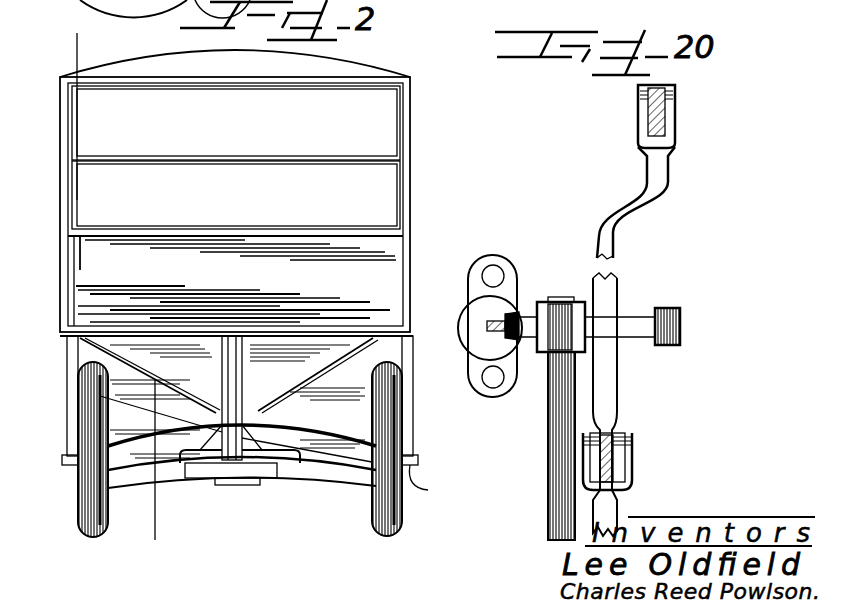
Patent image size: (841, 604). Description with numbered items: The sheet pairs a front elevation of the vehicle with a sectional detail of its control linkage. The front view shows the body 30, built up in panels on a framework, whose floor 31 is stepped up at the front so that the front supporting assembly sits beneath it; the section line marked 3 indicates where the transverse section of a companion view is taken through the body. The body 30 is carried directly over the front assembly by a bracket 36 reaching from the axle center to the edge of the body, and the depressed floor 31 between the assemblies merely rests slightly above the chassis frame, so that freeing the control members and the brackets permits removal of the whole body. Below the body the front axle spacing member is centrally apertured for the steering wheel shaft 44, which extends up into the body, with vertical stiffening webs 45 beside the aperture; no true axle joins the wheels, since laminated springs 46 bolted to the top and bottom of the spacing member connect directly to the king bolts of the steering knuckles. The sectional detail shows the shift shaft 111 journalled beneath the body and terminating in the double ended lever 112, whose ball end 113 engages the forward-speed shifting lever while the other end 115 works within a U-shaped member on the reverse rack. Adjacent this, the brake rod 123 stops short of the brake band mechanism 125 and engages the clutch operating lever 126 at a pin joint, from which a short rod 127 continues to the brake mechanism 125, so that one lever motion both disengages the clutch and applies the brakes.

In FIG. 2, the section line 3- 3 is at (62, 50).
In FIG. 2, the body 30 is at (412, 265).
In FIG. 2, the floor 31 is at (445, 480).
In FIG. 2, the bracket 36 is at (229, 398).
In FIG. 2, the steering wheel shaft 44 is at (270, 392).
In FIG. 2, the vertical stiffening web 45 is at (208, 414).
In FIG. 2, the laminated spring 46 is at (330, 412).
In FIG. 20, the shaft 111 is at (562, 418).
In FIG. 20, the double ended lever 112 is at (536, 312).
In FIG. 20, the ball end 113 is at (480, 340).
In FIG. 20, the other end of double lever 115 is at (682, 330).
In FIG. 20, the rod 123 is at (620, 506).
In FIG. 20, the brake band mechanism 125 is at (667, 97).
In FIG. 20, the clutch operating lever 126 is at (612, 440).
In FIG. 20, the short rod 127 is at (640, 207).